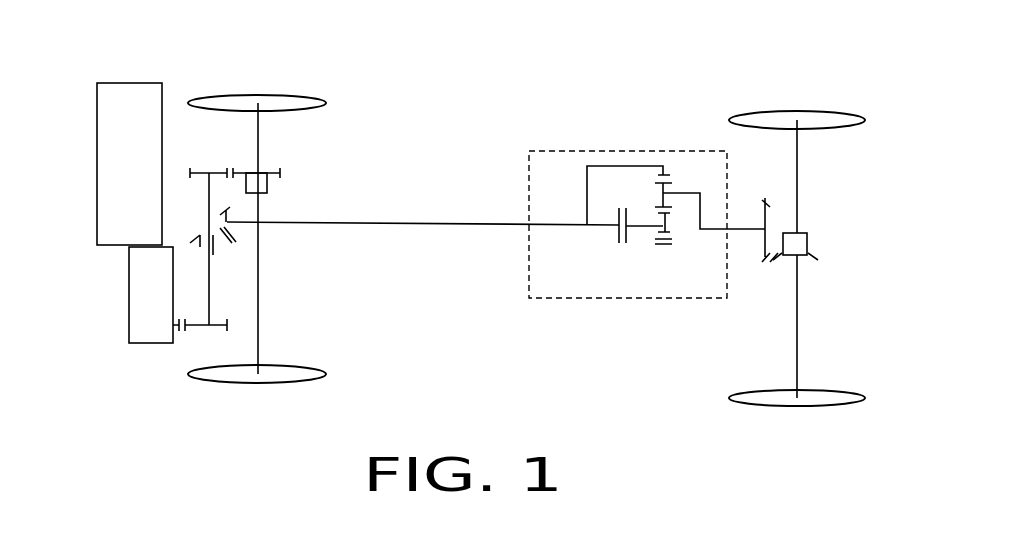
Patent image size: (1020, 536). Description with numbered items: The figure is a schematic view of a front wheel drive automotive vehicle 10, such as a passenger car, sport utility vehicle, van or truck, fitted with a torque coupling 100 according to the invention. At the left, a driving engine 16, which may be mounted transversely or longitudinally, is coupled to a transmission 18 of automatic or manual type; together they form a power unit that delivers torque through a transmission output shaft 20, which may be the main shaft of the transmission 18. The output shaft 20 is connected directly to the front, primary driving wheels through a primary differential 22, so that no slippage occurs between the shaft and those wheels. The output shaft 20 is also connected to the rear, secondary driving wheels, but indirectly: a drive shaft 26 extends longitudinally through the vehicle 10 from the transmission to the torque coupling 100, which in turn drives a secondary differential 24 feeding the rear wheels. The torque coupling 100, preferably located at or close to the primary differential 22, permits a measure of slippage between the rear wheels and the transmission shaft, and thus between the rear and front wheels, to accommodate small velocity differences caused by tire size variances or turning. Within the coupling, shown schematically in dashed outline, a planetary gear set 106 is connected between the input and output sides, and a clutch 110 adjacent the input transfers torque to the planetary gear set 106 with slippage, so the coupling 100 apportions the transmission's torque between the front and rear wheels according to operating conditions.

The automotive vehicle 10 is at (175, 388).
The driving engine 16 is at (110, 173).
The transmission 18 is at (143, 307).
The transmission output shaft 20 is at (175, 331).
The primary differential 22 is at (263, 187).
The secondary differential 24 is at (798, 244).
The drive shaft 26 is at (408, 226).
The torque coupling 100 is at (607, 290).
The planetary gear set 106 is at (668, 180).
The clutch 110 is at (623, 247).